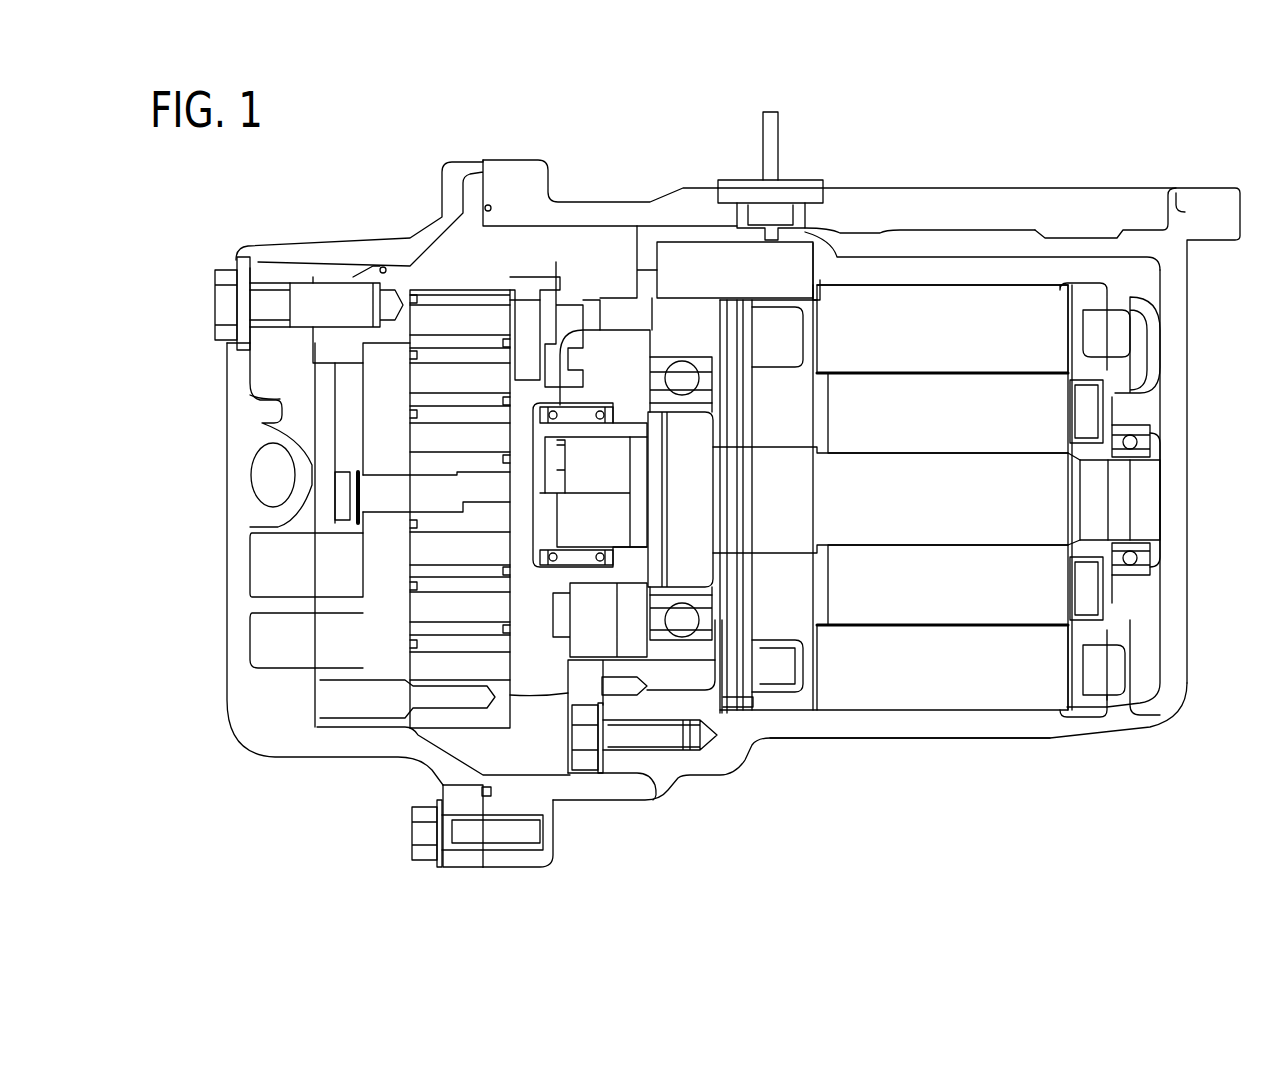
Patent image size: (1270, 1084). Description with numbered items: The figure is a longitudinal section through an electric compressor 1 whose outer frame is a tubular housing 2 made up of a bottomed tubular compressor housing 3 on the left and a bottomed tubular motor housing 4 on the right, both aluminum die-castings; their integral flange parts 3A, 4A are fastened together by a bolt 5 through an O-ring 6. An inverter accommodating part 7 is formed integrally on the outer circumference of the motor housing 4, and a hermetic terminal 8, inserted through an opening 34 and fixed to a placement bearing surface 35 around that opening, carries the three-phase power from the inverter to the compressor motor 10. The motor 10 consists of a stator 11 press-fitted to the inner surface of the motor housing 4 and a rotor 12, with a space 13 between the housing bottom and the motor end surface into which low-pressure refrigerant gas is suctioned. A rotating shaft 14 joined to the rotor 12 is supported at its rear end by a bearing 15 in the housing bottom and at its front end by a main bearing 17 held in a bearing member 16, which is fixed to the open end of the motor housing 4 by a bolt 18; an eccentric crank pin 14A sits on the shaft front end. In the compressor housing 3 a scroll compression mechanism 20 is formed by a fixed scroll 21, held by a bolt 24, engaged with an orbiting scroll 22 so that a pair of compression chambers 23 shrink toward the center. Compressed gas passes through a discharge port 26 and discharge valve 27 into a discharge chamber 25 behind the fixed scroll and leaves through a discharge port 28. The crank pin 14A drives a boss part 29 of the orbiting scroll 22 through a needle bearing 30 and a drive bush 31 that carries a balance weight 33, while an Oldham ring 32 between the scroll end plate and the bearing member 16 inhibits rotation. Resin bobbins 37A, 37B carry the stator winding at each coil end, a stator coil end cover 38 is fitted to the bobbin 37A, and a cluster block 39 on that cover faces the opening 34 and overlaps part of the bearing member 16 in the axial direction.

The compressor 1 is at (545, 140).
The housing 2 is at (866, 738).
The compressor housing 3 is at (245, 691).
The flange part 3A is at (462, 870).
The motor housing 4 is at (1170, 605).
The flange part 4A is at (512, 870).
The bolt 5 is at (415, 833).
The O-ring 6 is at (478, 791).
The inverter accommodating part 7 is at (1021, 200).
The hermetic terminal 8 is at (790, 182).
The compressor motor 10 is at (972, 692).
The stator 11 is at (1018, 340).
The rotor 12 is at (877, 432).
The space 13 is at (1117, 382).
The rotating shaft 14 is at (980, 536).
The crank pin 14A is at (660, 467).
The bearing 15 is at (1152, 551).
The bearing member 16 is at (703, 680).
The main bearing 17 is at (705, 402).
The bolt 18 is at (662, 760).
The scroll compression mechanism 20 is at (435, 255).
The fixed scroll 21 is at (365, 348).
The orbiting scroll 22 is at (522, 312).
The compression chambers 23 is at (460, 509).
The bolt 24 is at (267, 300).
The discharge chamber 25 is at (280, 399).
The discharge port 26 is at (390, 505).
The discharge valve 27 is at (358, 500).
The discharge port 28 is at (268, 474).
The boss part 29 is at (596, 408).
The needle bearing 30 is at (560, 566).
The drive bush 31 is at (632, 522).
The Oldham ring 32 is at (547, 335).
The balance weight 33 is at (622, 591).
The opening 34 is at (746, 216).
The placement bearing surface 35 is at (836, 232).
The resin bobbin 37A is at (808, 663).
The resin bobbin 37B is at (1080, 661).
The stator coil end cover 38 is at (760, 333).
The cluster block 39 is at (680, 250).